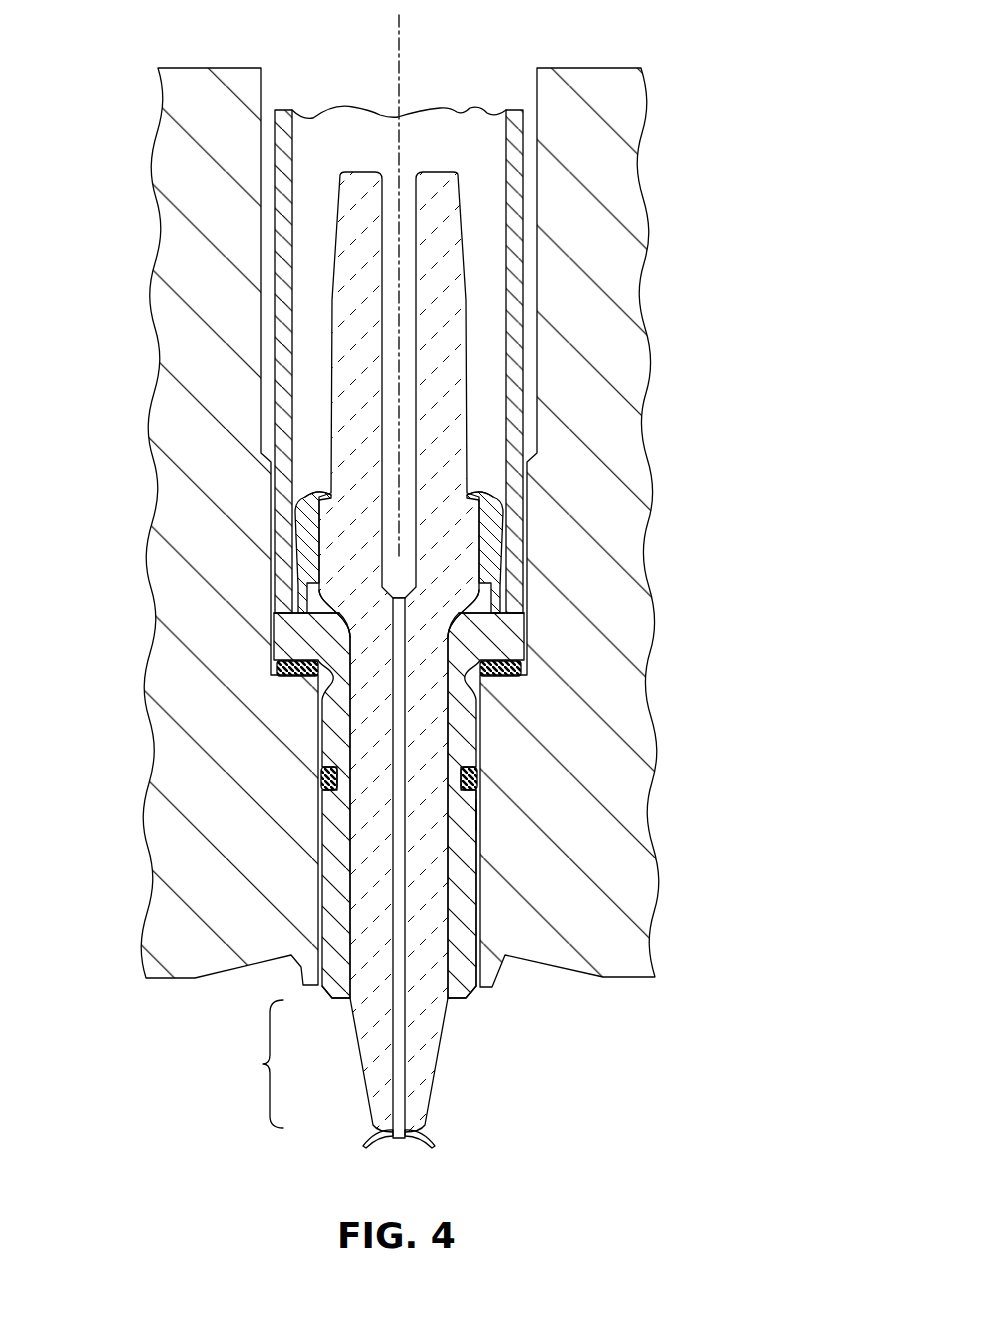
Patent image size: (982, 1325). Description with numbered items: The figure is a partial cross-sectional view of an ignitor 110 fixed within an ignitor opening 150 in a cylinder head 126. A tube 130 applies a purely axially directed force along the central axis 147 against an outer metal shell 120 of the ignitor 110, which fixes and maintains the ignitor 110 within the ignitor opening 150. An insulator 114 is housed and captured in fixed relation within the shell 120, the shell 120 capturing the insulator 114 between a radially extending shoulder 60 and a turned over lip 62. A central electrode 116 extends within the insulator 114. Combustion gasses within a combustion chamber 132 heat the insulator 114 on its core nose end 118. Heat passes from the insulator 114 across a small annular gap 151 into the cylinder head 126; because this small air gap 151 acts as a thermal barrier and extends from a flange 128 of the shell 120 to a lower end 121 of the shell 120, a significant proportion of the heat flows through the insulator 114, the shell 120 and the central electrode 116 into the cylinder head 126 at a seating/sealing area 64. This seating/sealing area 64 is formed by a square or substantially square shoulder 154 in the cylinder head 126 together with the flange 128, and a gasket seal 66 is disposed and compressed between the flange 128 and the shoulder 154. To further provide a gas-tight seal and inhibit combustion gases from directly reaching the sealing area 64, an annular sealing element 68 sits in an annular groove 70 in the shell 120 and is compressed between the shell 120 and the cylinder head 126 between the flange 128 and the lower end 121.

The ignitor 110 is at (768, 297).
The insulator 114 is at (467, 405).
The central electrode 116 is at (408, 1080).
The core nose end 118 is at (250, 1064).
The outer metal shell 120 is at (297, 528).
The lower end of the shell 121 is at (453, 1001).
The cylinder head 126 is at (612, 530).
The flange 128 is at (523, 637).
The tube 130 is at (522, 203).
The combustion chamber 132 is at (610, 1172).
The central axis 147 is at (405, 72).
The ignitor opening 150 is at (477, 818).
The annular gap 151 is at (322, 988).
The square shoulder 154 is at (540, 657).
The radially extending shoulder 60 is at (320, 592).
The turned over lip 62 is at (317, 497).
The seating/sealing area 64 is at (547, 611).
The gasket seal 66 is at (317, 677).
The annular sealing element 68 is at (478, 781).
The annular groove 70 is at (465, 767).